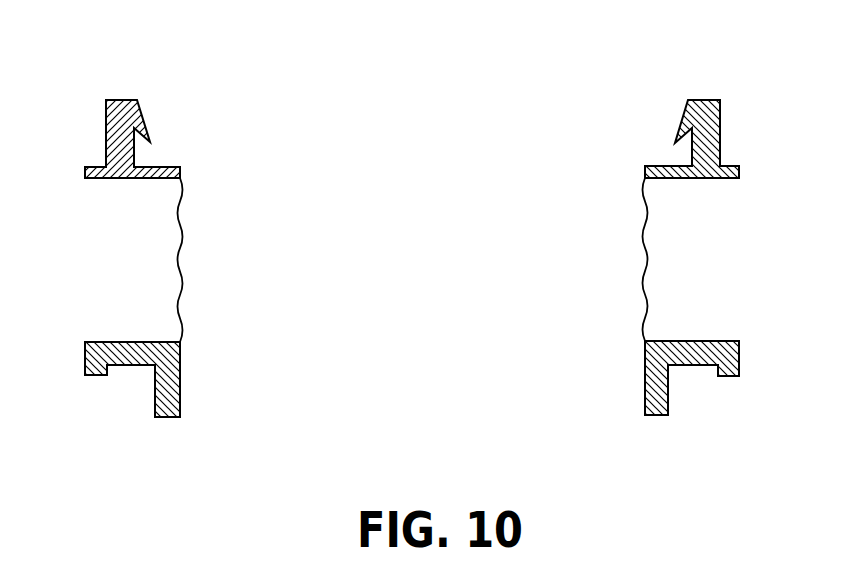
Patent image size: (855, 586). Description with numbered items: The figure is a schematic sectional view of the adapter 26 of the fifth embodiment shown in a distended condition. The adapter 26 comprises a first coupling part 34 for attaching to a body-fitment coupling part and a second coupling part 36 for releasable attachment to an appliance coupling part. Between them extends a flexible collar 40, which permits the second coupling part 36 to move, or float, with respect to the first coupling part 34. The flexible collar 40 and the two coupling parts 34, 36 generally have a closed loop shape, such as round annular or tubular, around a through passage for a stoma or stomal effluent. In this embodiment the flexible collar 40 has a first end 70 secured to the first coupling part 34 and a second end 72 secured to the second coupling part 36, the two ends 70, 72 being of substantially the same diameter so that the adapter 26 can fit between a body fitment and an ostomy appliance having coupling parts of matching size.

The adapter 26 is at (277, 193).
The first coupling part 34 is at (668, 393).
The second coupling part 36 is at (720, 100).
The flexible collar 40 is at (181, 260).
The first end 70 is at (181, 342).
The second end 72 is at (182, 197).